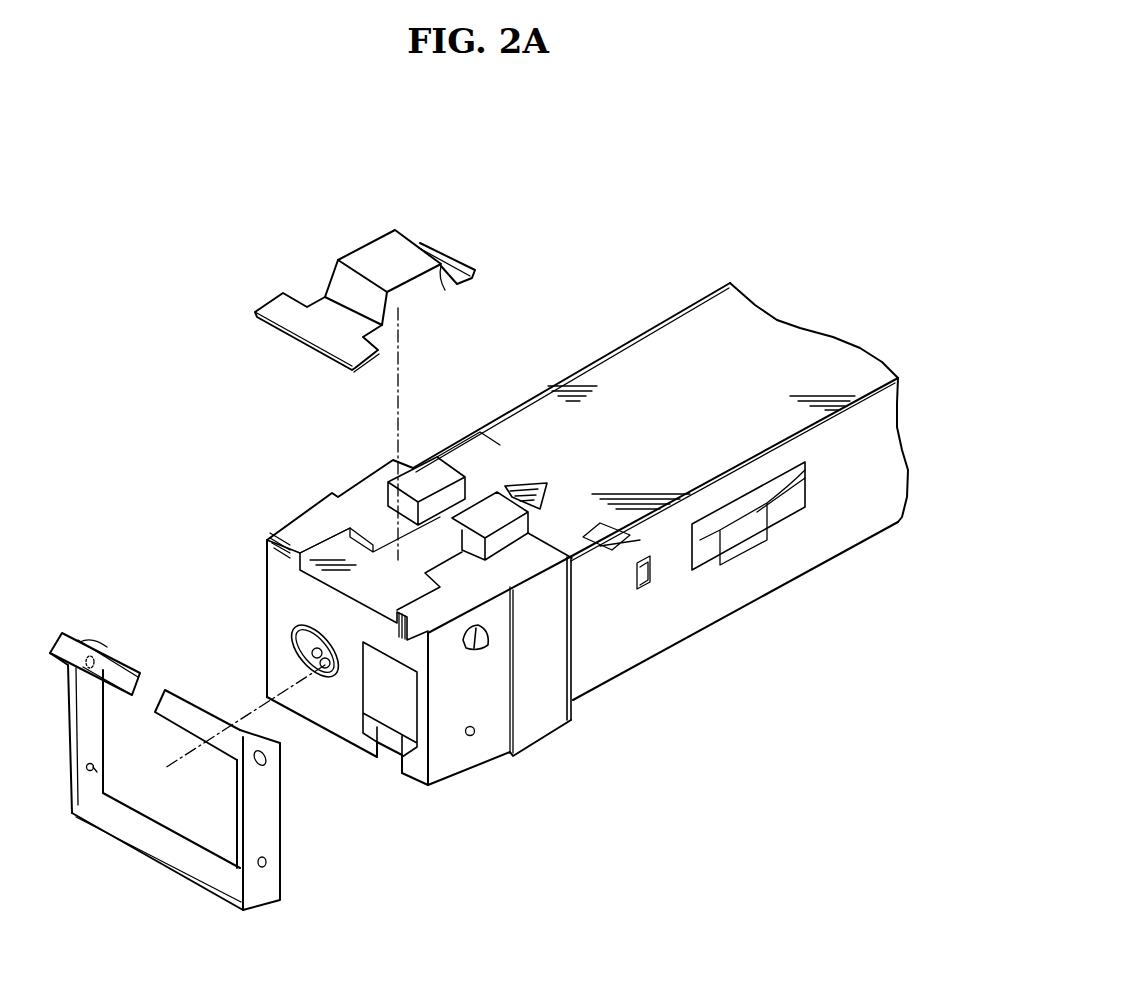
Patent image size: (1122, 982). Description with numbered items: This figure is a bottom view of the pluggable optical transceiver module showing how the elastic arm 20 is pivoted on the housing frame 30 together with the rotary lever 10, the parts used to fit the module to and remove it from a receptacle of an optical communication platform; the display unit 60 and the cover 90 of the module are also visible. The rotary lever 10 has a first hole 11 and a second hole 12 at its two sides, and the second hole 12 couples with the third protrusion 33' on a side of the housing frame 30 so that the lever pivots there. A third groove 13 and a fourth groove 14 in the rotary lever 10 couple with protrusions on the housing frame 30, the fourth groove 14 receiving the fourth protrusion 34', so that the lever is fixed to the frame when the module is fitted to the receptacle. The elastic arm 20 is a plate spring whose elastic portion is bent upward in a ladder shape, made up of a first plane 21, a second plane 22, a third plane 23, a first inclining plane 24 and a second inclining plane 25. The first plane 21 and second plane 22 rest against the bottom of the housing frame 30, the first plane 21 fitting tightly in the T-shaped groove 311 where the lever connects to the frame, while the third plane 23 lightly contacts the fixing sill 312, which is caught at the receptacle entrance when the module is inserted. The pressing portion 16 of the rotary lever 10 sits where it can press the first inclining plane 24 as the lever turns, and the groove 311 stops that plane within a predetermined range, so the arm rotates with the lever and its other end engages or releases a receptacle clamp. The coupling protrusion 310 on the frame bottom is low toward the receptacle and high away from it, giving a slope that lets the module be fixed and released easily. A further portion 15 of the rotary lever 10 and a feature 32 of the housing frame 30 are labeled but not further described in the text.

The rotary lever 10 is at (190, 768).
The first hole 11 is at (94, 670).
The second hole 12 is at (268, 762).
The third groove 13 is at (96, 770).
The fourth groove 14 is at (267, 865).
The base plate of bracket 15 is at (172, 873).
The pressing portion 16 is at (130, 682).
The elastic arm 20 is at (388, 267).
The first plane 21 is at (277, 310).
The second plane 22 is at (466, 266).
The third plane 23 is at (386, 243).
The first inclining plane 24 is at (338, 285).
The second inclining plane 25 is at (445, 290).
The housing frame 30 is at (663, 395).
The coupling protrusion 310 is at (527, 482).
The groove 311 is at (365, 580).
The fixing sill 312 is at (445, 477).
The slot 32 is at (393, 690).
The third protrusion 33' is at (521, 705).
The fourth protrusion 34' is at (493, 774).
The display unit 60 is at (302, 636).
The cover 90 is at (693, 630).